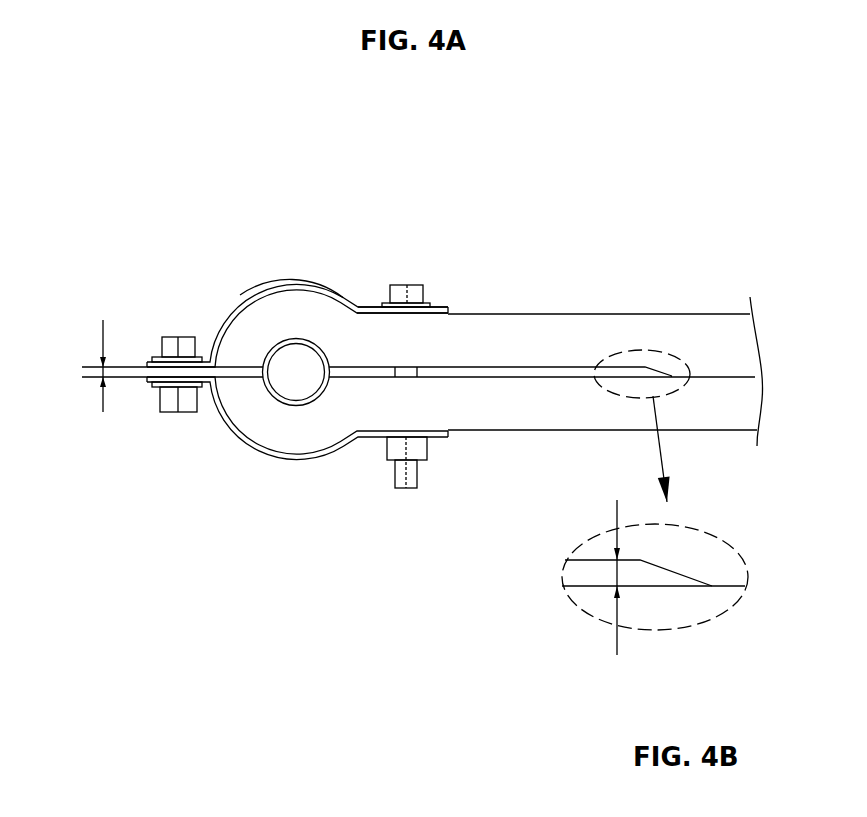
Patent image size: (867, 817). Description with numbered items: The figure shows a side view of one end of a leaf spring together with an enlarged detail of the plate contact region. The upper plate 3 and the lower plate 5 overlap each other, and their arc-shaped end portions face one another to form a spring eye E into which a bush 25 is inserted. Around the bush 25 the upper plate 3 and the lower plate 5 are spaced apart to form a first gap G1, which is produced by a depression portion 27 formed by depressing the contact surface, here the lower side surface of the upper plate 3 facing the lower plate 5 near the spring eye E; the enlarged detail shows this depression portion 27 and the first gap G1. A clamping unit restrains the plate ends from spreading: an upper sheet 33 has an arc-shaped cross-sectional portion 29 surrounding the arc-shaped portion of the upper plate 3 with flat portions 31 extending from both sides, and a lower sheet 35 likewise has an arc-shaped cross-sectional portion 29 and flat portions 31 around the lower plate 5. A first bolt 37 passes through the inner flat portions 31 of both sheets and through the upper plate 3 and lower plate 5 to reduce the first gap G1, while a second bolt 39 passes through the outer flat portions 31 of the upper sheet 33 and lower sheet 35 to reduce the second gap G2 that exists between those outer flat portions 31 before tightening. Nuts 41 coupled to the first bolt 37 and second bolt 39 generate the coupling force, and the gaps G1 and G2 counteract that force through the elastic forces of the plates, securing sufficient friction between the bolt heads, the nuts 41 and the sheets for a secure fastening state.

In FIG. 4B, the upper plate 3 is at (706, 551).
In FIG. 4B, the lower plate 5 is at (700, 613).
In FIG. 4A, the bush 25 is at (320, 399).
In FIG. 4B, the depression portion 27 is at (590, 561).
In FIG. 4A, the arc-shaped cross-sectional portion 29 is at (258, 300).
In FIG. 4A, the flat portion 31 is at (375, 306).
In FIG. 4A, the upper sheet 33 is at (298, 286).
In FIG. 4A, the lower sheet 35 is at (237, 441).
In FIG. 4A, the first bolt 37 is at (413, 292).
In FIG. 4A, the second bolt 39 is at (167, 337).
In FIG. 4A, the nut 41 is at (167, 402).
In FIG. 4A, the spring eye E is at (295, 376).
In FIG. 4B, the first gap G1 is at (601, 580).
In FIG. 4A, the second gap G2 is at (83, 366).